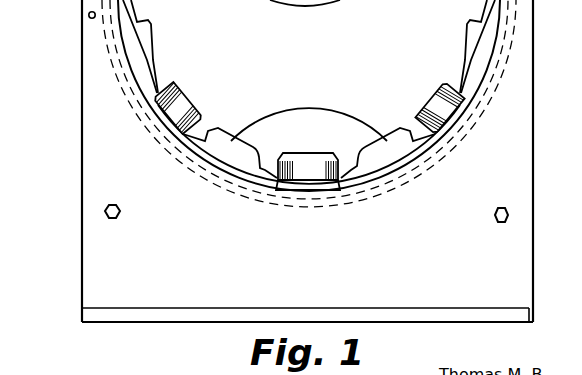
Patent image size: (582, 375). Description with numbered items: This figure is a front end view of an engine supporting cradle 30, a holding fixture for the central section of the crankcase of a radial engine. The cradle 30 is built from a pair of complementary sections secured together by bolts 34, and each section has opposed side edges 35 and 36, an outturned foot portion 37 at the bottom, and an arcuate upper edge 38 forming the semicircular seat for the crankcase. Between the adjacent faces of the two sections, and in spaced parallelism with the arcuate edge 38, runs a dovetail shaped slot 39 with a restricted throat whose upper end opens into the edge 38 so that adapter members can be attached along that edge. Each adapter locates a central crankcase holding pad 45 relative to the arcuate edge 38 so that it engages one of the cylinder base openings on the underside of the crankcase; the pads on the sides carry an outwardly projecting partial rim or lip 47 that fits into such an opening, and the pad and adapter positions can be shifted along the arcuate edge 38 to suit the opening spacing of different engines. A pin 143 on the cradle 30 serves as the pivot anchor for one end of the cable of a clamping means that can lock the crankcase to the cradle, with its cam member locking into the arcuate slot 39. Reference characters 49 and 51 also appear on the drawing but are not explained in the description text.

The cradle 30 is at (310, 178).
The bolts 34 is at (105, 209).
The side edge 35 is at (533, 124).
The side edge 36 is at (82, 133).
The outturned foot portion 37 is at (437, 316).
The arcuate upper edge 38 is at (392, 178).
The dovetail shaped slot 39 is at (112, 65).
The central crankcase holding pad 45 is at (298, 153).
The partial rim or lip 47 is at (150, 43).
The upper roller element 49 is at (357, 0).
The held cylindrical member 51 is at (297, 70).
The pin 143 is at (89, 14).